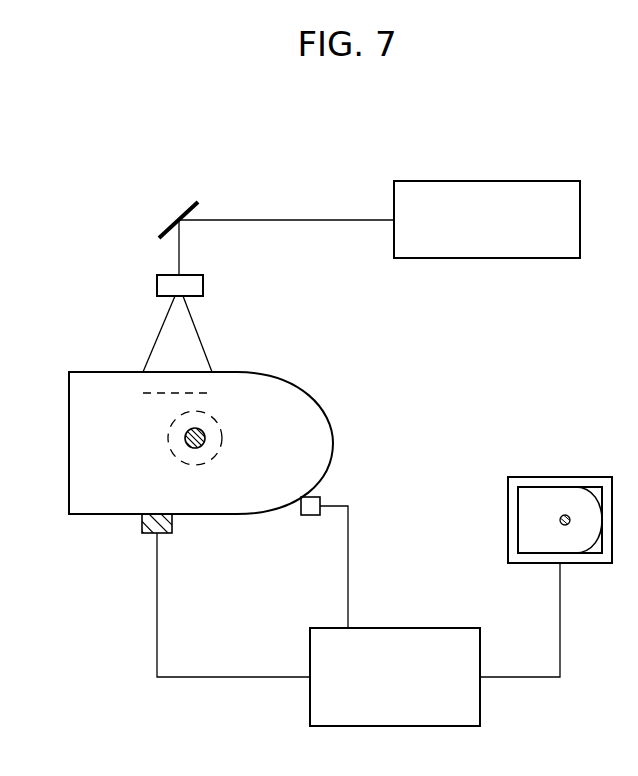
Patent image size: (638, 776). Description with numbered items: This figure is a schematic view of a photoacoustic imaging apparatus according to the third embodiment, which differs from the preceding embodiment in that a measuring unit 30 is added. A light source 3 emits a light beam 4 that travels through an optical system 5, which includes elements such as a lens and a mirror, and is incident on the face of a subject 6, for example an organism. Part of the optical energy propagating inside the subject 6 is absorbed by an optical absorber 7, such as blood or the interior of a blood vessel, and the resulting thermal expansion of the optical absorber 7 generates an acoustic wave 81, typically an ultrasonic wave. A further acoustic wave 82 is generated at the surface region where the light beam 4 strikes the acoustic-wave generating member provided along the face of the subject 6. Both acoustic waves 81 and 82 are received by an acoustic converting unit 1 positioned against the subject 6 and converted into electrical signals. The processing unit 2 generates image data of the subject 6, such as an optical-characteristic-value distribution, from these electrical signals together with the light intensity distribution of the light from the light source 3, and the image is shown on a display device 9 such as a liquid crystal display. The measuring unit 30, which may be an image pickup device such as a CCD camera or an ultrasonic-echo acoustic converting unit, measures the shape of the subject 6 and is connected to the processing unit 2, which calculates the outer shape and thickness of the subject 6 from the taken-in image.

The acoustic converting unit 1 is at (143, 530).
The processing unit 2 is at (443, 628).
The light source 3 is at (525, 181).
The light beam 4 is at (280, 220).
The optical system 5 is at (192, 277).
The subject 6 is at (299, 432).
The optical absorber 7 is at (205, 432).
The display device 9 is at (508, 525).
The measuring unit 30 is at (308, 515).
The acoustic wave 81 is at (178, 420).
The acoustic wave 82 is at (142, 393).